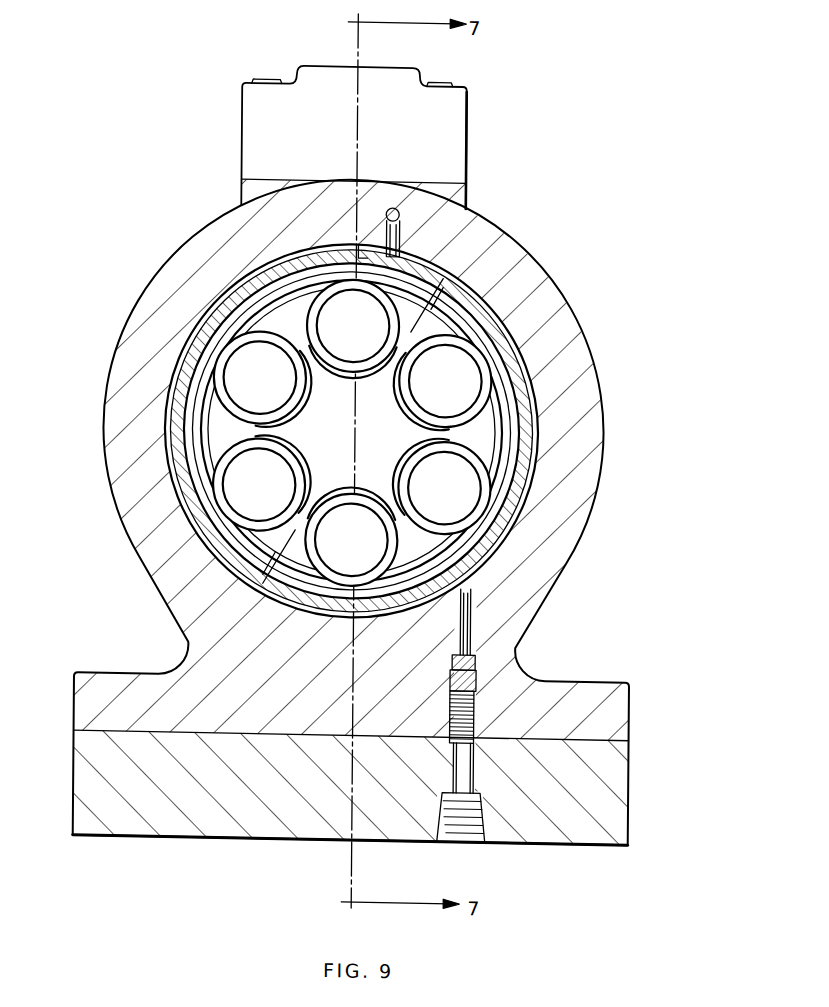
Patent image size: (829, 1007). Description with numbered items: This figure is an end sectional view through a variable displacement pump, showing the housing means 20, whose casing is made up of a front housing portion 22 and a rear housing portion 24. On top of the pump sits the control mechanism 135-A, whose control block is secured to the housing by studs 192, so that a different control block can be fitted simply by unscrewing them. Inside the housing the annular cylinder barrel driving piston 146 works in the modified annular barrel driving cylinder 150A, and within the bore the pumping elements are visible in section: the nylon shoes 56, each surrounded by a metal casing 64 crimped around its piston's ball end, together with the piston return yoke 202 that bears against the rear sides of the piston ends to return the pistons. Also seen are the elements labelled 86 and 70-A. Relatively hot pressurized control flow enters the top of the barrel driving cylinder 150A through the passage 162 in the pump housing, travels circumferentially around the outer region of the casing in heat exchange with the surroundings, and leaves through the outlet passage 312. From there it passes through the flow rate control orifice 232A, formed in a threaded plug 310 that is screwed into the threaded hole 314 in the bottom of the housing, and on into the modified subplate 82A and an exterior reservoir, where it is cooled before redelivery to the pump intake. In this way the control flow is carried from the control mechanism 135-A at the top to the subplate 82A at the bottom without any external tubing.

The housing means 20 is at (136, 296).
The front housing portion 22 is at (163, 260).
The rear housing portion 24 is at (229, 192).
The control mechanism 135-A is at (473, 116).
The studs 192 is at (450, 85).
The passage 162 is at (391, 207).
The annular barrel driving cylinder 150A is at (526, 354).
The cylinder barrel driving piston 146 is at (537, 450).
The retaining ring 86 is at (498, 514).
The ring 70-A is at (488, 558).
The metal casing 64 is at (476, 335).
The nylon shoes 56 is at (481, 347).
The piston return yoke 202 is at (488, 420).
The outlet passage 312 is at (474, 606).
The flow rate control orifice 232A is at (475, 655).
The threaded plug 310 is at (479, 674).
The threaded hole 314 is at (472, 710).
The subplate 82A is at (610, 790).